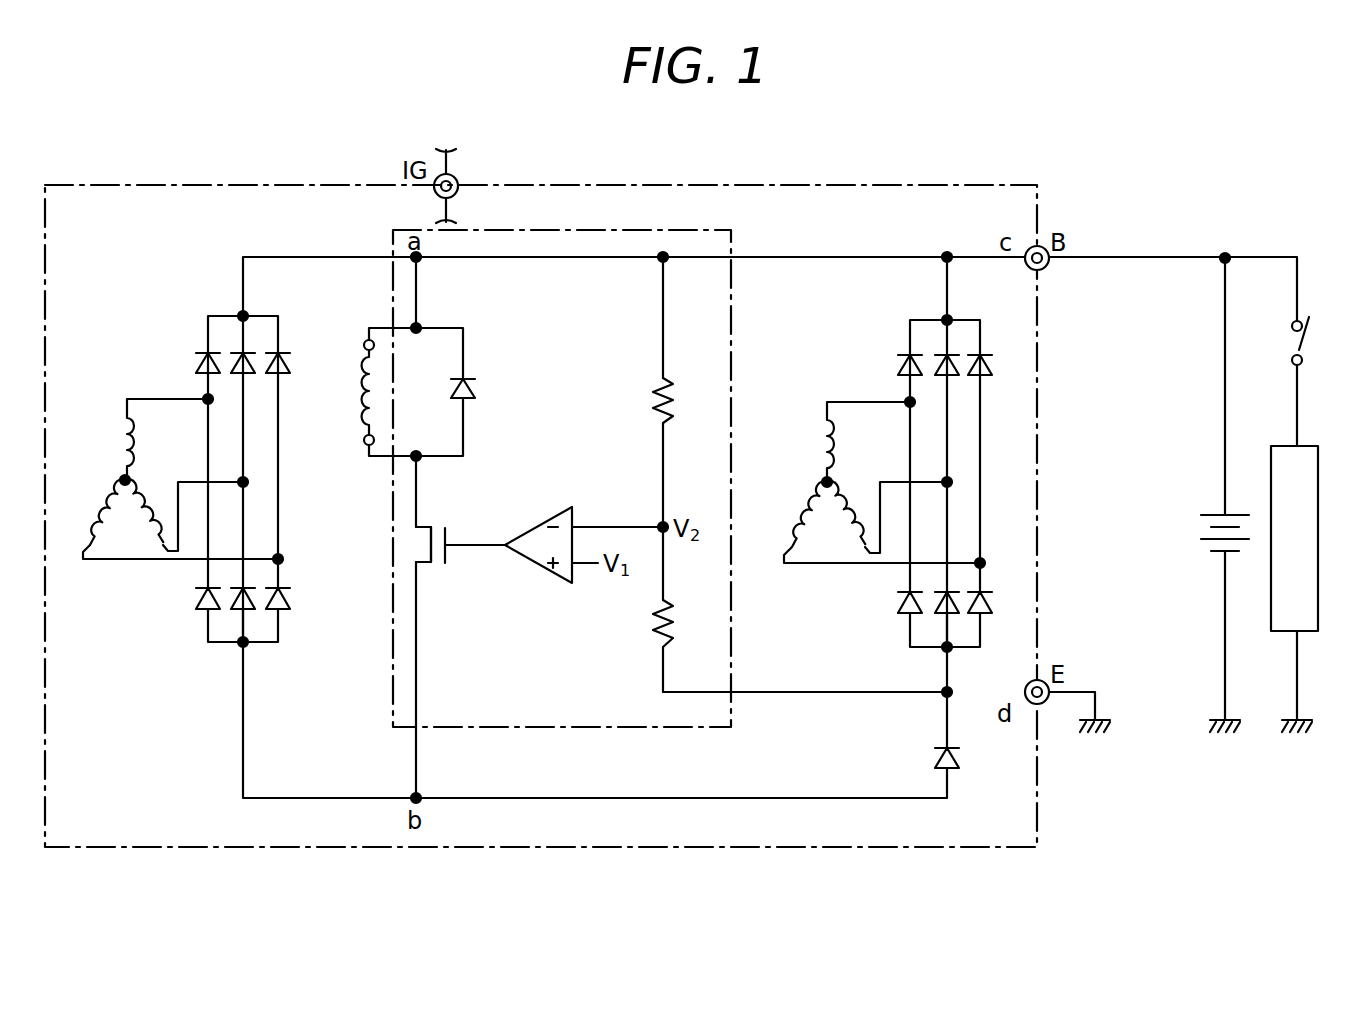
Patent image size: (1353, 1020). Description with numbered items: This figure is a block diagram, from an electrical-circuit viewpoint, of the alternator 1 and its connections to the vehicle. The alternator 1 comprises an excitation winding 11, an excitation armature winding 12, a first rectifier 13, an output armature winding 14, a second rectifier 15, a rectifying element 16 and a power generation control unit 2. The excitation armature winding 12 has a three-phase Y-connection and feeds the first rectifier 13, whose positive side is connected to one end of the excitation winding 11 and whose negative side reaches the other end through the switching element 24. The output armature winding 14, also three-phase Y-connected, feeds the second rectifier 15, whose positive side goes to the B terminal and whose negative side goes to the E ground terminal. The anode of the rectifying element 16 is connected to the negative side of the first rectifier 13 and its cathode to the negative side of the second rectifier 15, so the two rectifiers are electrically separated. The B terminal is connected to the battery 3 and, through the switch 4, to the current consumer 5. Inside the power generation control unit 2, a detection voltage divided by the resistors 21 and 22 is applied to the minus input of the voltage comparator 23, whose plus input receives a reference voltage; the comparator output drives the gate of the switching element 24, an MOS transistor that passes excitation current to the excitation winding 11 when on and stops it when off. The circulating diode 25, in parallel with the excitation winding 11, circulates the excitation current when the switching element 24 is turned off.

The alternator 1 is at (1013, 186).
The power generation control unit 2 is at (712, 230).
The battery 3 is at (1227, 515).
The switch 4 is at (1311, 326).
The current consumer 5 is at (1305, 446).
The excitation winding 11 is at (363, 342).
The excitation armature winding 12 is at (123, 480).
The excitation rectifier 13 is at (221, 316).
The output armature winding 14 is at (824, 480).
The output rectifier 15 is at (923, 320).
The rectifying element 16 is at (942, 749).
The resistor 21 is at (656, 395).
The resistor 22 is at (655, 646).
The voltage comparator 23 is at (550, 521).
The switching element 24 is at (430, 532).
The circulating diode 25 is at (466, 379).